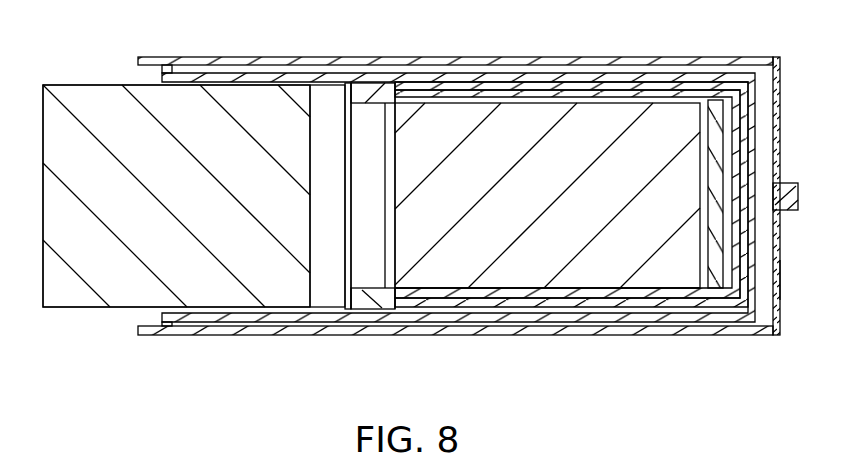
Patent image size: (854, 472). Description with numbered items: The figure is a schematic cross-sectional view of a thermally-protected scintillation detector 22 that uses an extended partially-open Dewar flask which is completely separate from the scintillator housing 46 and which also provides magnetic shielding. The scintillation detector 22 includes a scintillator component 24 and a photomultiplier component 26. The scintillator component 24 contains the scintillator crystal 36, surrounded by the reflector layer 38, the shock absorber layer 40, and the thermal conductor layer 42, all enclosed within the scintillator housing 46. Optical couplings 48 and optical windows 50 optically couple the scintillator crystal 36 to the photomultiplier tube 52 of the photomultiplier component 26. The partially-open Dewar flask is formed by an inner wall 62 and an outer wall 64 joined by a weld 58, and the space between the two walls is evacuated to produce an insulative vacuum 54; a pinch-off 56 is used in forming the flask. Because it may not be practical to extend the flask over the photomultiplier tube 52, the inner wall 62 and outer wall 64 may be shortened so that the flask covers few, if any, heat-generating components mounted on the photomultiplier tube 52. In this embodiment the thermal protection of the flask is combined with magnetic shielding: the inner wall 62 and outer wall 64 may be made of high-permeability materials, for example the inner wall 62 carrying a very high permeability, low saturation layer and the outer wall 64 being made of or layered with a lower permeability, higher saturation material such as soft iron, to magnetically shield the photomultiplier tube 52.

The scintillation detector 22 is at (120, 383).
The scintillator component 24 is at (766, 343).
The photomultiplier component 26 is at (189, 212).
The scintillator crystal 36 is at (466, 264).
The reflector layer 38 is at (569, 291).
The shock absorber layer 40 is at (496, 87).
The thermal conductor layer 42 is at (576, 84).
The scintillator housing 46 is at (740, 92).
The optical couplings 48 is at (393, 274).
The optical windows 50 is at (363, 121).
The photomultiplier tube 52 is at (95, 100).
The insulative vacuum 54 is at (767, 105).
The pinch-off 56 is at (796, 211).
The weld 58 is at (167, 328).
The inner wall 62 is at (696, 321).
The outer wall 64 is at (780, 275).